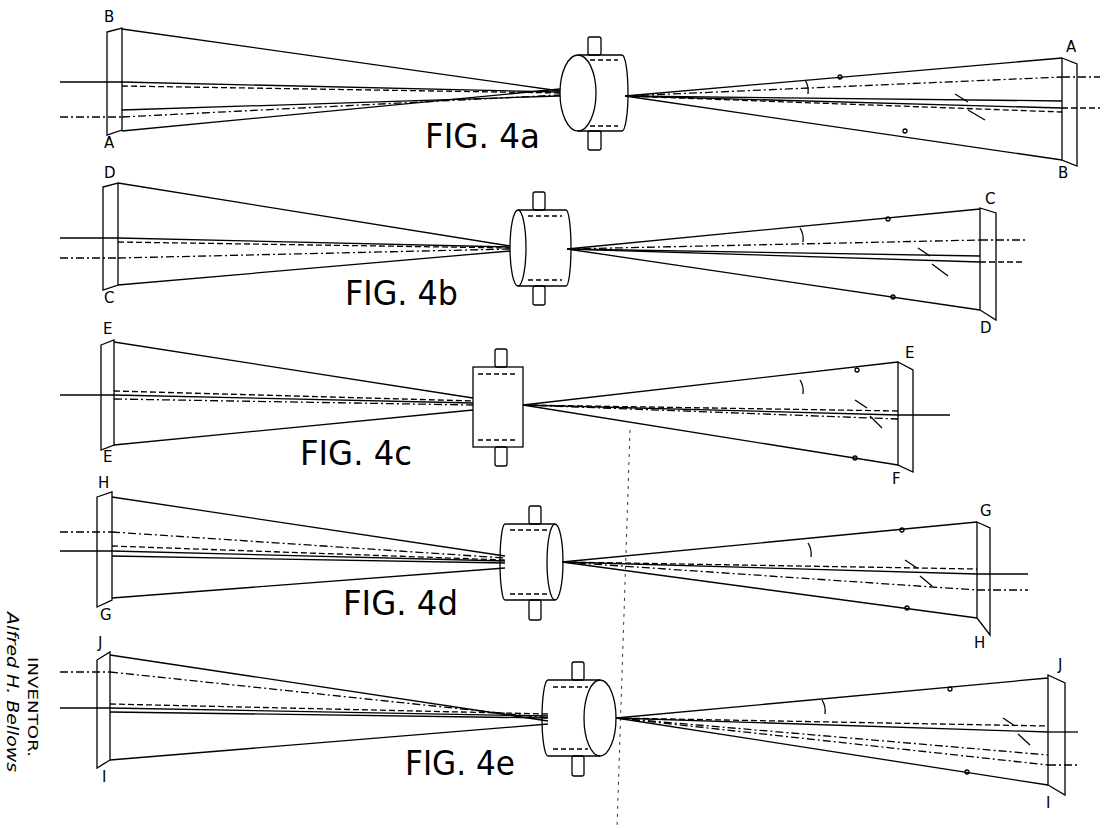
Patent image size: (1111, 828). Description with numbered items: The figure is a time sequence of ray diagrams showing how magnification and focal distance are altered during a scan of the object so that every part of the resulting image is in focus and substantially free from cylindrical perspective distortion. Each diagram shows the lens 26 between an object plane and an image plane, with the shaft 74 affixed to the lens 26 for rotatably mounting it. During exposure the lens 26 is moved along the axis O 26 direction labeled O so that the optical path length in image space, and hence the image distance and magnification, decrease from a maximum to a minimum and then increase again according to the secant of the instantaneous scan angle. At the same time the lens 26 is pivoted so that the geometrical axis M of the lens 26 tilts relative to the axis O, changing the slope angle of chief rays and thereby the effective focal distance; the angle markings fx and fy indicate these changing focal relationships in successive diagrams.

In FIG. 4A, the lens 26 is at (630, 62).
In FIG. 4B, the lens 26 is at (572, 222).
In FIG. 4C, the lens 26 is at (530, 382).
In FIG. 4D, the lens 26 is at (562, 528).
In FIG. 4E, the lens 26 is at (606, 676).
In FIG. 4A, the shaft 74 is at (588, 48).
In FIG. 4B, the shaft 74 is at (533, 204).
In FIG. 4C, the shaft 74 is at (496, 360).
In FIG. 4D, the shaft 74 is at (531, 518).
In FIG. 4E, the shaft 74 is at (572, 672).
In FIG. 4A, the optical axis O— O is at (580, 95).
In FIG. 4B, the optical axis O— O is at (550, 250).
In FIG. 4C, the optical axis O— O is at (511, 394).
In FIG. 4D, the optical axis O— O is at (546, 562).
In FIG. 4E, the optical axis O— O is at (573, 720).
In FIG. 4A, the geometrical axis M— M is at (580, 97).
In FIG. 4B, the geometrical axis M— M is at (550, 250).
In FIG. 4C, the geometrical axis M— M is at (511, 411).
In FIG. 4D, the geometrical axis M— M is at (547, 562).
In FIG. 4E, the geometrical axis M— M is at (571, 719).
In FIG. 4A, the focal length fx is at (970, 114).
In FIG. 4B, the focal length fx is at (933, 269).
In FIG. 4C, the focal length fx is at (869, 421).
In FIG. 4D, the focal length fx is at (919, 581).
In FIG. 4E, the focal length fx is at (1016, 738).
In FIG. 4A, the focal length fy is at (815, 89).
In FIG. 4B, the focal length fy is at (810, 237).
In FIG. 4C, the focal length fy is at (810, 389).
In FIG. 4D, the focal length fy is at (818, 553).
In FIG. 4E, the focal length fy is at (833, 709).